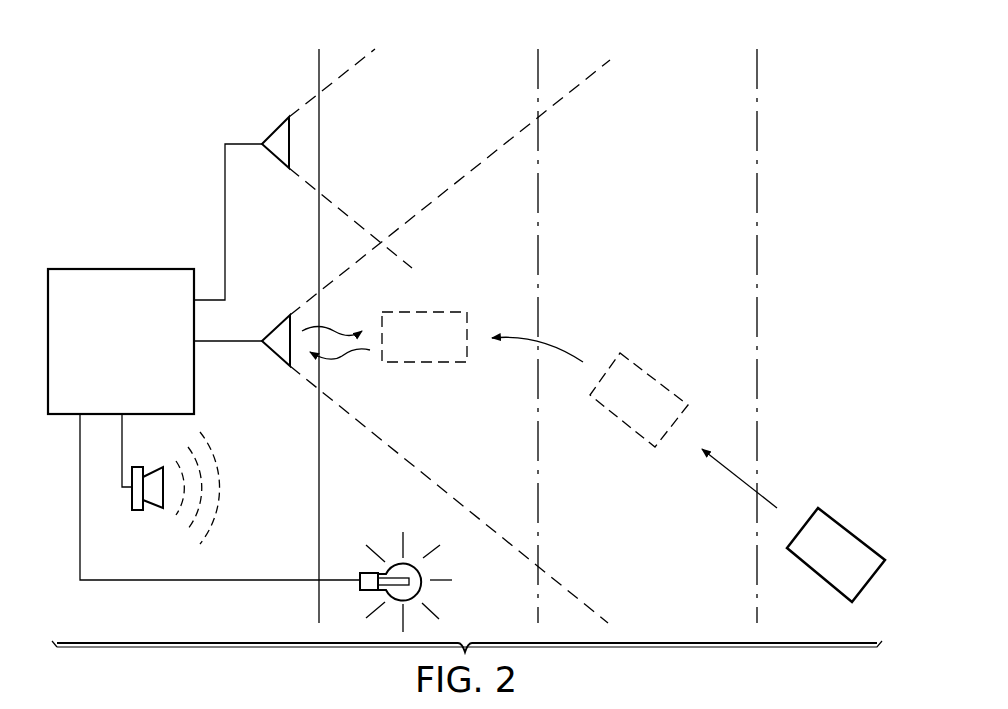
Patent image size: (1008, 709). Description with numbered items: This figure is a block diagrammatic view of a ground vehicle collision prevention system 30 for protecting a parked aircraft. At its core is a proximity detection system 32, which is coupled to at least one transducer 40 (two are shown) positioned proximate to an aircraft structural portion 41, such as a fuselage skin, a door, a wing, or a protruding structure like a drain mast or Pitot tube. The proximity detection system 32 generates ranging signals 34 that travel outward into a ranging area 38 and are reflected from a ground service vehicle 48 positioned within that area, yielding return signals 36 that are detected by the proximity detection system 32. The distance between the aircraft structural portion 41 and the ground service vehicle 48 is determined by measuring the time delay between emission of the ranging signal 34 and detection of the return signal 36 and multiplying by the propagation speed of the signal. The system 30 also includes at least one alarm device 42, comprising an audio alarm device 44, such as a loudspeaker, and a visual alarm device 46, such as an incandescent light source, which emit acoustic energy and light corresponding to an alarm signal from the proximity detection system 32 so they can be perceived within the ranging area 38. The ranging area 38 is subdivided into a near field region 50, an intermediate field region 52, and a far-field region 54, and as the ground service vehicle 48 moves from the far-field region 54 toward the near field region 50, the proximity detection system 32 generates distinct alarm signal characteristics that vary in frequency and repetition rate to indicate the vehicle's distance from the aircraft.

The ground vehicle collision prevention system 30 is at (166, 70).
The proximity detection system 32 is at (107, 358).
The ranging signals 34 is at (331, 338).
The return signals 36 is at (350, 359).
The ranging area 38 is at (354, 218).
The transducer 40 is at (278, 143).
The aircraft structural portion 41 is at (318, 72).
The alarm device 42 is at (266, 525).
The audio alarm device 44 is at (138, 510).
The visual alarm device 46 is at (365, 592).
The ground service vehicle 48 is at (436, 363).
The near field region 50 is at (492, 284).
The intermediate field region 52 is at (633, 284).
The far-field region 54 is at (815, 284).